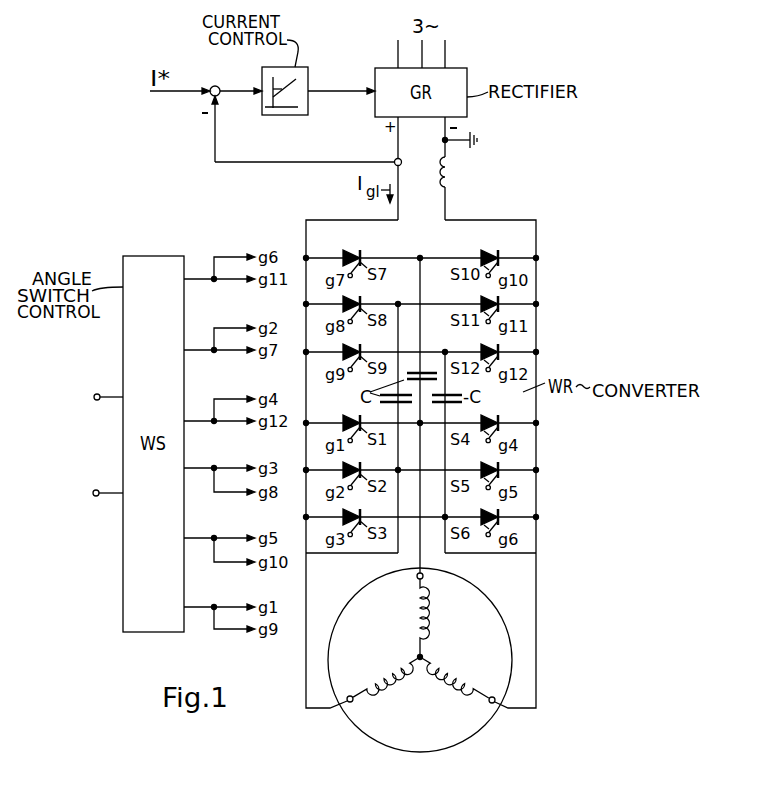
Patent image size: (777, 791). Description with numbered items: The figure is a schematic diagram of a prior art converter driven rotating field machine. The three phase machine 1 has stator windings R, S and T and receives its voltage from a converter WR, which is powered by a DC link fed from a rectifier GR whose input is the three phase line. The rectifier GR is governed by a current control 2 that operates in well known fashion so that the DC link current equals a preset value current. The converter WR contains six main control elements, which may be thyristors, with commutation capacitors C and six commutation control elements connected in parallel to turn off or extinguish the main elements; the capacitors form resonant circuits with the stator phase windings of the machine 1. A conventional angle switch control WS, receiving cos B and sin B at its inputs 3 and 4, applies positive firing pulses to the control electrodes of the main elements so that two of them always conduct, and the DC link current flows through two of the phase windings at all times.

The three phase machine 1 is at (493, 615).
The current control 2 is at (308, 78).
The input 3 is at (100, 399).
The input 4 is at (100, 494).